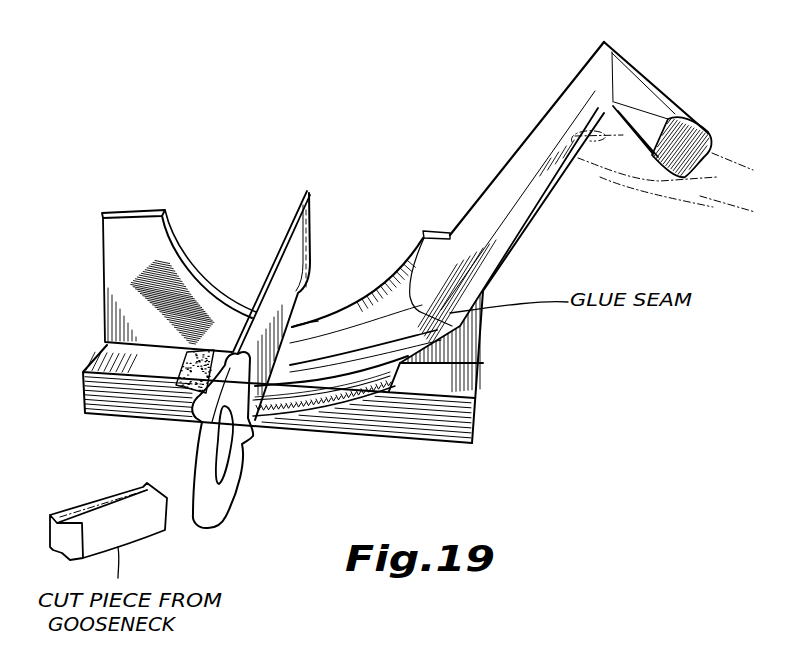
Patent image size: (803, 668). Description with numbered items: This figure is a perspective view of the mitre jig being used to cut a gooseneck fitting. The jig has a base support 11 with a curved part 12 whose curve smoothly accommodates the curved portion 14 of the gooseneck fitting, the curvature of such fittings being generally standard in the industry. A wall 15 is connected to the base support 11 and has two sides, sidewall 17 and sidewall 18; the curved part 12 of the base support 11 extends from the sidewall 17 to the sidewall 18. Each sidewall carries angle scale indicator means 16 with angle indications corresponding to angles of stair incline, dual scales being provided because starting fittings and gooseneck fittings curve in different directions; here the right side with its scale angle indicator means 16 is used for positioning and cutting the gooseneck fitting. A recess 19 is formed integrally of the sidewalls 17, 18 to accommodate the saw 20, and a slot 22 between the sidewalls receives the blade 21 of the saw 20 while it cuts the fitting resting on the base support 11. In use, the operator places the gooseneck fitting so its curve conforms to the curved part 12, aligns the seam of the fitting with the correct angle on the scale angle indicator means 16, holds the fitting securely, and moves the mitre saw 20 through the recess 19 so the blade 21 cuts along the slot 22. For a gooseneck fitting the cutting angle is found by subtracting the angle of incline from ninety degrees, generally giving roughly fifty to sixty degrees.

The base support 11 is at (110, 406).
The curved part 12 is at (308, 413).
The curved portion of gooseneck fitting 14 is at (303, 393).
The wall 15 is at (497, 367).
The angle scale indicator means 16 is at (130, 262).
The sidewall 17 is at (135, 262).
The sidewall 18 is at (465, 357).
The recess 19 is at (141, 281).
The saw 20 is at (287, 258).
The blade 21 is at (273, 417).
The slot 22 is at (296, 316).